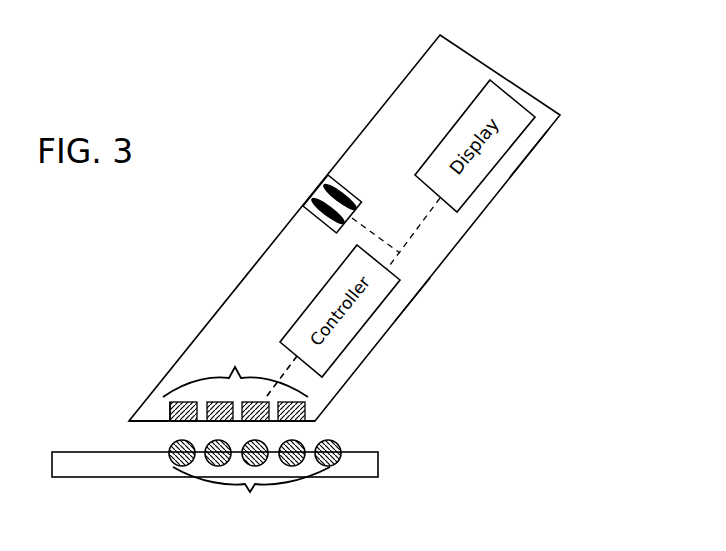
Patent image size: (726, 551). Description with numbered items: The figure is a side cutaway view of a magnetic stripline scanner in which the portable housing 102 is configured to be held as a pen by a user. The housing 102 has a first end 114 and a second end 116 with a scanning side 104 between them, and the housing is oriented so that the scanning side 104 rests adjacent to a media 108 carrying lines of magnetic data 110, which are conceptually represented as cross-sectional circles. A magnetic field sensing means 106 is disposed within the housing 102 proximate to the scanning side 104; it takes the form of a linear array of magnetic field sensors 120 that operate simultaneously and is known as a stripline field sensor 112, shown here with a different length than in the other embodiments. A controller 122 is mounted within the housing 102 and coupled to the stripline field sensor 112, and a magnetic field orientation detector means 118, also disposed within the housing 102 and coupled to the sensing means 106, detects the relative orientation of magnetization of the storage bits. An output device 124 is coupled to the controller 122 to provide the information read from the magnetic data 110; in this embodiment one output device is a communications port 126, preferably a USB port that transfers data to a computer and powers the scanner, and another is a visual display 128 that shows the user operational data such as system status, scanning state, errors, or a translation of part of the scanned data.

The portable housing 102 is at (437, 271).
The scanning side 104 is at (149, 432).
The magnetic field sensing means 106 is at (214, 336).
The media 108 is at (365, 465).
The lines of magnetic data 110 is at (255, 482).
The stripline field sensor 112 is at (235, 368).
The first end 114 is at (119, 423).
The second end 116 is at (328, 421).
The magnetic field orientation detector means 118 is at (291, 383).
The magnetic field sensors 120 is at (170, 412).
The controller 122 is at (366, 316).
The output device 124 is at (296, 178).
The communications port 126 is at (326, 201).
The visual display 128 is at (521, 137).